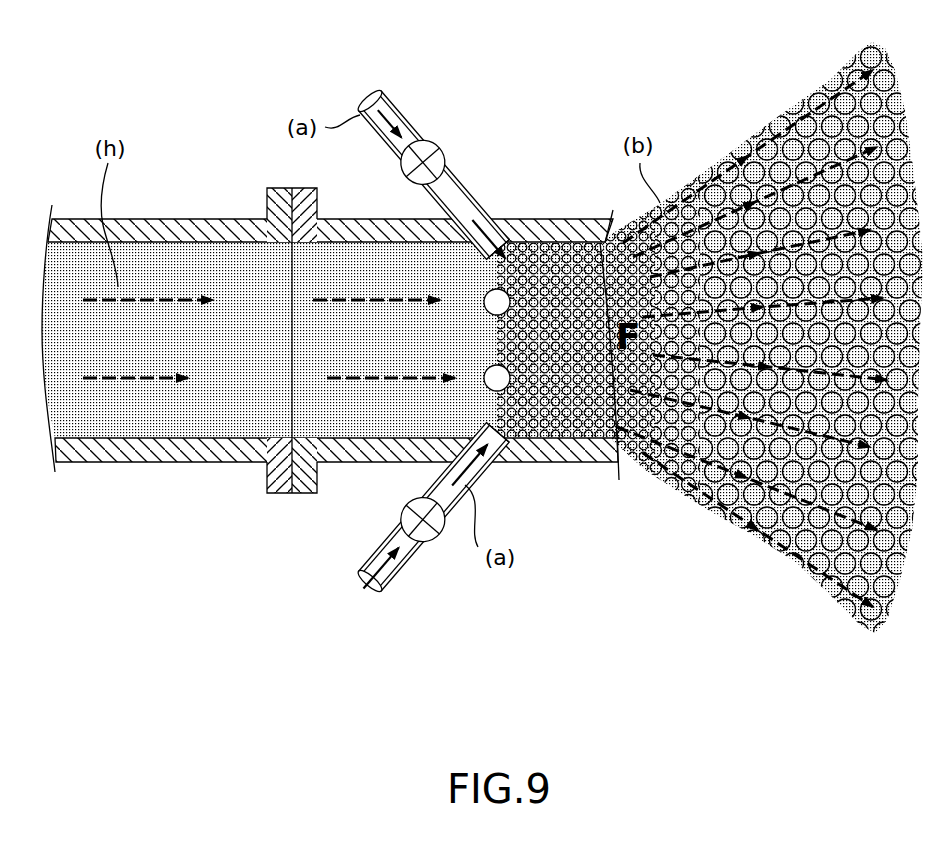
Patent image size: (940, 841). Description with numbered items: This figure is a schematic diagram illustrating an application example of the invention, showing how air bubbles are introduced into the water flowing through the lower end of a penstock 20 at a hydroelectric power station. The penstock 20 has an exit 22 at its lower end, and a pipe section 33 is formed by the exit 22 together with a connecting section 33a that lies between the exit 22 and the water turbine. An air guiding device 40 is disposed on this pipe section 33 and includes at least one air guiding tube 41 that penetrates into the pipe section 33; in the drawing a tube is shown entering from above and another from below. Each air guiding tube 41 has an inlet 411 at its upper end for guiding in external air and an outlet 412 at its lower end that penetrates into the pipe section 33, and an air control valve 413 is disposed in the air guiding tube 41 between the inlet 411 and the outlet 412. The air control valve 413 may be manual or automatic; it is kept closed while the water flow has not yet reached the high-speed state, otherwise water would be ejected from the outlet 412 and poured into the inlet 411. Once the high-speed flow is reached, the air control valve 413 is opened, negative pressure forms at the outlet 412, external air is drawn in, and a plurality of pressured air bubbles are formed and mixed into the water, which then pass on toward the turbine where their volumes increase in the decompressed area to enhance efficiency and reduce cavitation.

The penstock 20 is at (205, 219).
The exit 22 is at (290, 345).
The pipe section 33 is at (583, 625).
The connecting section 33a is at (570, 452).
The air guiding device 40 is at (452, 142).
The air guiding tube 41 is at (405, 112).
The inlet 411 is at (360, 93).
The outlet 412 is at (522, 223).
The air control valve 413 is at (535, 42).